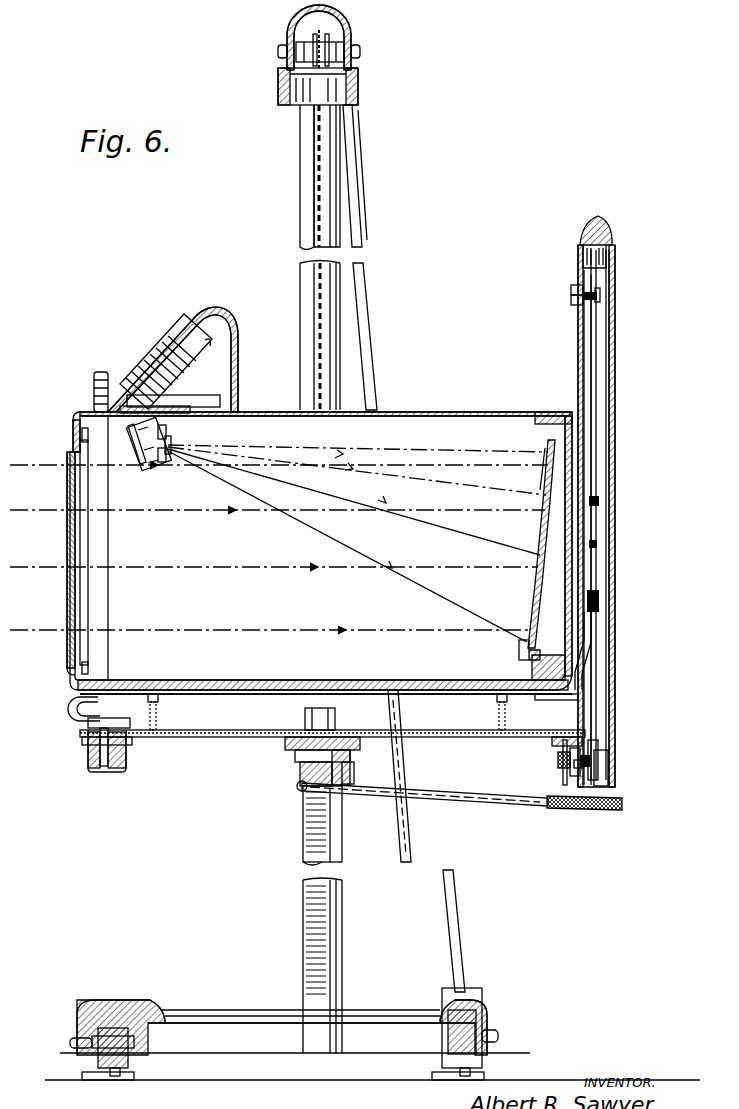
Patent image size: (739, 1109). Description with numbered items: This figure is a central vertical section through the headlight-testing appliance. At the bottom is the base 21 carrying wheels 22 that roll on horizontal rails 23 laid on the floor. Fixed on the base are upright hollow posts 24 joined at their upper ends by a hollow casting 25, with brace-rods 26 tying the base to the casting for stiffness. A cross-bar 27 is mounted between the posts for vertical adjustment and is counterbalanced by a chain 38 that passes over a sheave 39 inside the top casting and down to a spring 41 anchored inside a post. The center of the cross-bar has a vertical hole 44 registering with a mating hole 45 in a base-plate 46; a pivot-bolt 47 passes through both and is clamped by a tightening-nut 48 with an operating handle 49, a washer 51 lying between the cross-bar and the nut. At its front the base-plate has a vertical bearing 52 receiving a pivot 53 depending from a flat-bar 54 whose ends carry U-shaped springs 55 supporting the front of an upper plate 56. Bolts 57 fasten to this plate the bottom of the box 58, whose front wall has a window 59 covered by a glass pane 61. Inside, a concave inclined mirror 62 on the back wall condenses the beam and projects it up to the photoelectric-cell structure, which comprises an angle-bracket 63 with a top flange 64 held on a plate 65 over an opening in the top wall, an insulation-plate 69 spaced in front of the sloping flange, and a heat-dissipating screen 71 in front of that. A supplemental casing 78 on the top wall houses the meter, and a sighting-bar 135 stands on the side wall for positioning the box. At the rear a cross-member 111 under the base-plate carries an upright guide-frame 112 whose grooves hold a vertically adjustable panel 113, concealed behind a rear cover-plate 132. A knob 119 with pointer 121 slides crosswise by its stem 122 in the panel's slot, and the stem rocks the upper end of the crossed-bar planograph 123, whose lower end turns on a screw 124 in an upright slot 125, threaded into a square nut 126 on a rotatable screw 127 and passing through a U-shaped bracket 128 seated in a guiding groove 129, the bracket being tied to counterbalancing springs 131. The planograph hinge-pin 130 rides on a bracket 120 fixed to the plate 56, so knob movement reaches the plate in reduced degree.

The base 21 is at (240, 1028).
The carrying-wheels 22 is at (108, 1028).
The rails or tracks 23 is at (112, 1076).
The hollow posts 24 is at (300, 182).
The hollow-casting 25 is at (292, 74).
The brace-rods 26 is at (362, 250).
The cross-bar 27 is at (285, 744).
The chain 38 is at (322, 165).
The pulley or sheave 39 is at (336, 48).
The counterbalancing spring 41 is at (303, 856).
The vertical hole 44 is at (295, 756).
The mating hole 45 is at (335, 730).
The base-plate 46 is at (292, 730).
The pivot-bolt 47 is at (350, 754).
The tightening-nut 48 is at (298, 784).
The operating-handle 49 is at (460, 800).
The washer 51 is at (352, 770).
The vertical-bearing 52 is at (126, 750).
The vertical-pivot 53 is at (100, 742).
The flat-bar 54 is at (88, 720).
The U-shaped springs 55 is at (80, 708).
The upper plate 56 is at (320, 690).
The bolts 57 is at (155, 698).
The box or container 58 is at (410, 412).
The window 59 is at (70, 541).
The glass-pane 61 is at (90, 553).
The reflecting-mirror 62 is at (538, 532).
The angle-bracket 63 is at (132, 437).
The top-flange 64 is at (358, 530).
The plate 65 is at (185, 397).
The insulation-plate 69 is at (145, 466).
The heat-dissipating metallic-screen 71 is at (172, 442).
The supplemental-casing 78 is at (213, 310).
The cross-member 111 is at (552, 742).
The upright guide-frame 112 is at (598, 438).
The metal plate or panel 113 is at (584, 355).
The knob 119 is at (571, 300).
The bracket 120 is at (584, 650).
The pointer 121 is at (574, 285).
The shank or stem 122 is at (599, 290).
The planograph-mechanism 123 is at (594, 418).
The screw 124 is at (598, 755).
The upright-slot 125 is at (578, 770).
The square-nut 126 is at (558, 760).
The screw 127 is at (564, 775).
The U-shaped bracket 128 is at (604, 770).
The guiding-groove 129 is at (578, 726).
The hinge-pin 130 is at (599, 600).
The counterbalancing springs 131 is at (599, 503).
The rear cover-plate 132 is at (612, 350).
The sighting-bar 135 is at (94, 389).